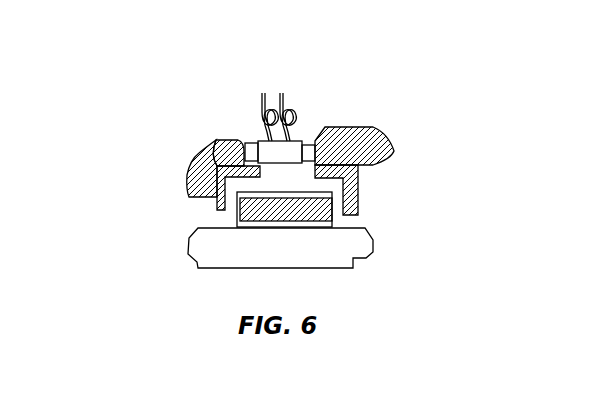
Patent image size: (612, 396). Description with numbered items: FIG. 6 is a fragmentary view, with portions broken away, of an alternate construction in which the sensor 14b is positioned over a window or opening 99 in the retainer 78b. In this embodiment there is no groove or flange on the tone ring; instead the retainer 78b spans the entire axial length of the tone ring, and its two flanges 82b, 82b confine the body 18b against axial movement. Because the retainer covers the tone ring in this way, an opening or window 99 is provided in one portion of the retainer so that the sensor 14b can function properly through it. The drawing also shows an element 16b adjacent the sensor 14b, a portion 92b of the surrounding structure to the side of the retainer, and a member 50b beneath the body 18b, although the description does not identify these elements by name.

The sensor 14b is at (306, 139).
The opening or window 99 is at (316, 140).
The lens 16b is at (240, 139).
The retainer 78b is at (217, 150).
The flanges 82b is at (216, 207).
The housing portion 92b is at (393, 152).
The body 18b is at (334, 227).
The circuit board 50b is at (296, 259).